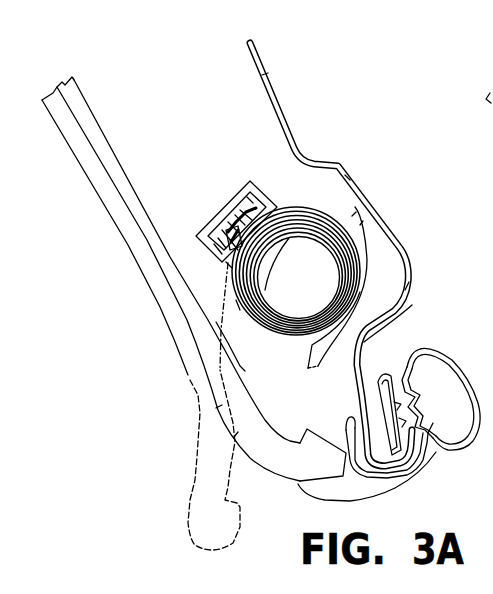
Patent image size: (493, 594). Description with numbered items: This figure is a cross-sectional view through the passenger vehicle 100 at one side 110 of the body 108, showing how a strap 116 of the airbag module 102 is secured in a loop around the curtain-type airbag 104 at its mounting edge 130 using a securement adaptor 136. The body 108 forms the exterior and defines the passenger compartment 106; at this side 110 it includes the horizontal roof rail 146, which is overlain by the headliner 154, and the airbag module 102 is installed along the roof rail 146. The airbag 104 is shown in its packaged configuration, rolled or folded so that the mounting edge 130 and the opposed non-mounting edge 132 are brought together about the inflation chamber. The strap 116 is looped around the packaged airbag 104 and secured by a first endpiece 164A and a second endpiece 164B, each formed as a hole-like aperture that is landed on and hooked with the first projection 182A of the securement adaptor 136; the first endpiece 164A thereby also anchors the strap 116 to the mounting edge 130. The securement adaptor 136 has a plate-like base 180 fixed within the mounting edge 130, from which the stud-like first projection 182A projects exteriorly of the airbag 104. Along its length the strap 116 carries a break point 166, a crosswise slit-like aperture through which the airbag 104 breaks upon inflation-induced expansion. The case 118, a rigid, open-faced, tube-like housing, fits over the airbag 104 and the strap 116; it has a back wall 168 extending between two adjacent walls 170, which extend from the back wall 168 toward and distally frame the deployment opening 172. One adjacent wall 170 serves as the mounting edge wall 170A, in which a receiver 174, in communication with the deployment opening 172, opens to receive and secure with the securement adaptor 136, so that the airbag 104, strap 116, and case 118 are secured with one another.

The passenger vehicle 100 is at (194, 279).
The passenger compartment 106 is at (184, 379).
The body 108 is at (220, 416).
The side 110 is at (234, 437).
The headliner 154 is at (242, 475).
The deployment opening 172 is at (188, 372).
The receiver 174 is at (227, 259).
The base 180 is at (235, 305).
The mounting edge 130 is at (277, 205).
The roof rail 146 is at (287, 120).
The non-mounting edge 132 is at (305, 205).
The back wall 168 is at (386, 248).
The airbag module 102 is at (357, 249).
The airbag 104 is at (343, 211).
The strap 116 is at (352, 216).
The case 118 is at (360, 225).
The break point 166 is at (305, 368).
The securement adaptor 136 is at (146, 240).
The first projection 182A is at (215, 232).
The first endpiece 164A is at (126, 264).
The second endpiece 164B is at (226, 247).
The mounting edge wall 170A is at (250, 200).
The adjacent walls 170 is at (405, 308).